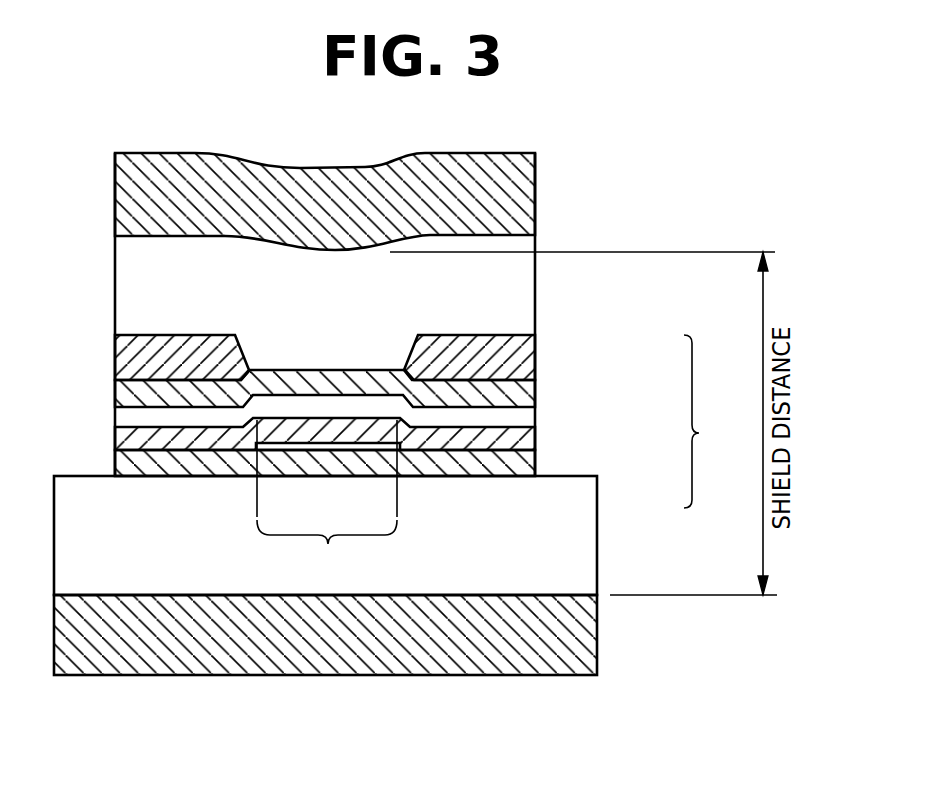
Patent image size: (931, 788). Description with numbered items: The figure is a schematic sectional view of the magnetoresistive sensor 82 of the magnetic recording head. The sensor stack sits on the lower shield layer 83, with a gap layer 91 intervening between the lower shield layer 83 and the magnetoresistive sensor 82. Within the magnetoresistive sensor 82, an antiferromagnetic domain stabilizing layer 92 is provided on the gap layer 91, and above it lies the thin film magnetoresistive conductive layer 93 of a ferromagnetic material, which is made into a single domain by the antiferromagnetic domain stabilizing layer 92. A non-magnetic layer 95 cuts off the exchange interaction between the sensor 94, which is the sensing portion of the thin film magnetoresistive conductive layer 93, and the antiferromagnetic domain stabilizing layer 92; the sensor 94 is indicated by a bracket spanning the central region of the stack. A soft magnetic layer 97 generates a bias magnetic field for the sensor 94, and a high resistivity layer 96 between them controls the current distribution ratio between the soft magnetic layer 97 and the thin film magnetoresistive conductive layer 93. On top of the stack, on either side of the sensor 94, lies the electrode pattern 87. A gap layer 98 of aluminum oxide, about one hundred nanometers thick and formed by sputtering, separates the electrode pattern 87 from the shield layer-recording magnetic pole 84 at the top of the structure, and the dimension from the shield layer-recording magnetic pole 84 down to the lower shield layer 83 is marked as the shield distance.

The magnetoresistive sensor 82 is at (714, 421).
The lower shield layer 83 is at (578, 638).
The shield layer-recording magnetic pole 84 is at (513, 198).
The electrode pattern 87 is at (132, 358).
The gap layer 91 is at (578, 544).
The antiferromagnetic domain stabilizing layer 92 is at (525, 462).
The thin film magnetoresistive conductive layer 93 is at (523, 437).
The sensor 94 is at (327, 500).
The non-magnetic layer 95 is at (303, 450).
The high resistivity layer 96 is at (523, 418).
The soft magnetic layer 97 is at (523, 397).
The gap layer 98 is at (508, 292).